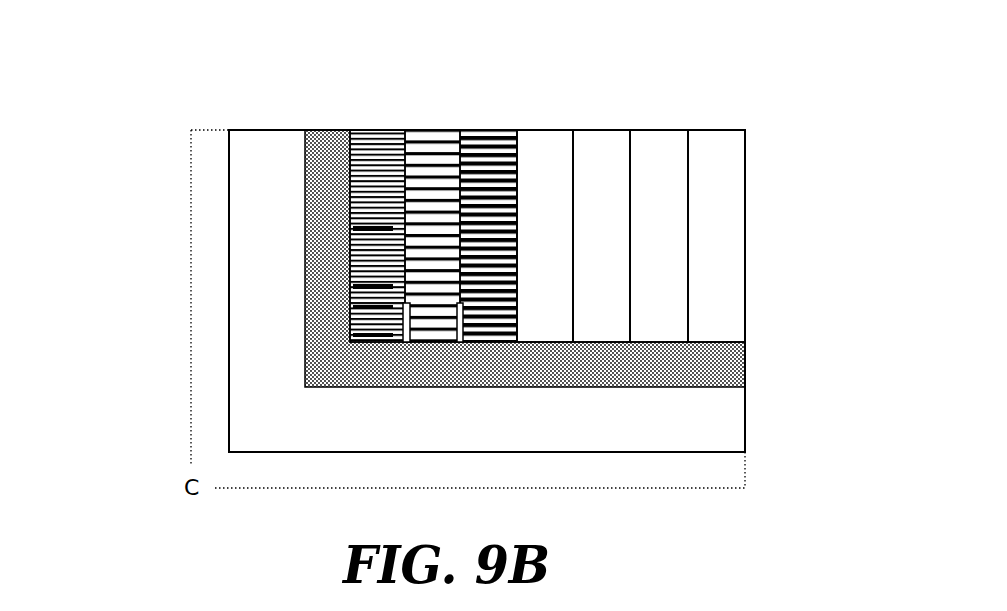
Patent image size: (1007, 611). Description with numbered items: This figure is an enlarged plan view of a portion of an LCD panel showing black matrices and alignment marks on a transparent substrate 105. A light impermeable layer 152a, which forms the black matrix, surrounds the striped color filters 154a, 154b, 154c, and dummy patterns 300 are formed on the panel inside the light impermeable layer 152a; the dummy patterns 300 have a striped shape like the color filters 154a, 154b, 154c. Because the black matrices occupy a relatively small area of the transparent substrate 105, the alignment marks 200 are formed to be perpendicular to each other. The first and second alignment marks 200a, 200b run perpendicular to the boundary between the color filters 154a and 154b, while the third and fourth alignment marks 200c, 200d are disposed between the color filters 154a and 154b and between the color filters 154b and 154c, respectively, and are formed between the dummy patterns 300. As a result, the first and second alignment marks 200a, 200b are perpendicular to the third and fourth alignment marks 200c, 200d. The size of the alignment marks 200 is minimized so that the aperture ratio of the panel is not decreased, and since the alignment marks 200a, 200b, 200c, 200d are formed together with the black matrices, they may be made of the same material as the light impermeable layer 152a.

The transparent substrate 105 is at (730, 420).
The light impermeable layer 152a is at (735, 356).
The color filter 154a is at (539, 130).
The color filter 154b is at (605, 130).
The color filter 154c is at (670, 130).
The alignment marks 200 is at (103, 210).
The first alignment mark 200a is at (352, 228).
The second alignment mark 200b is at (352, 280).
The third alignment mark 200c is at (350, 310).
The fourth alignment mark 200d is at (352, 334).
The dummy patterns 300 is at (503, 120).